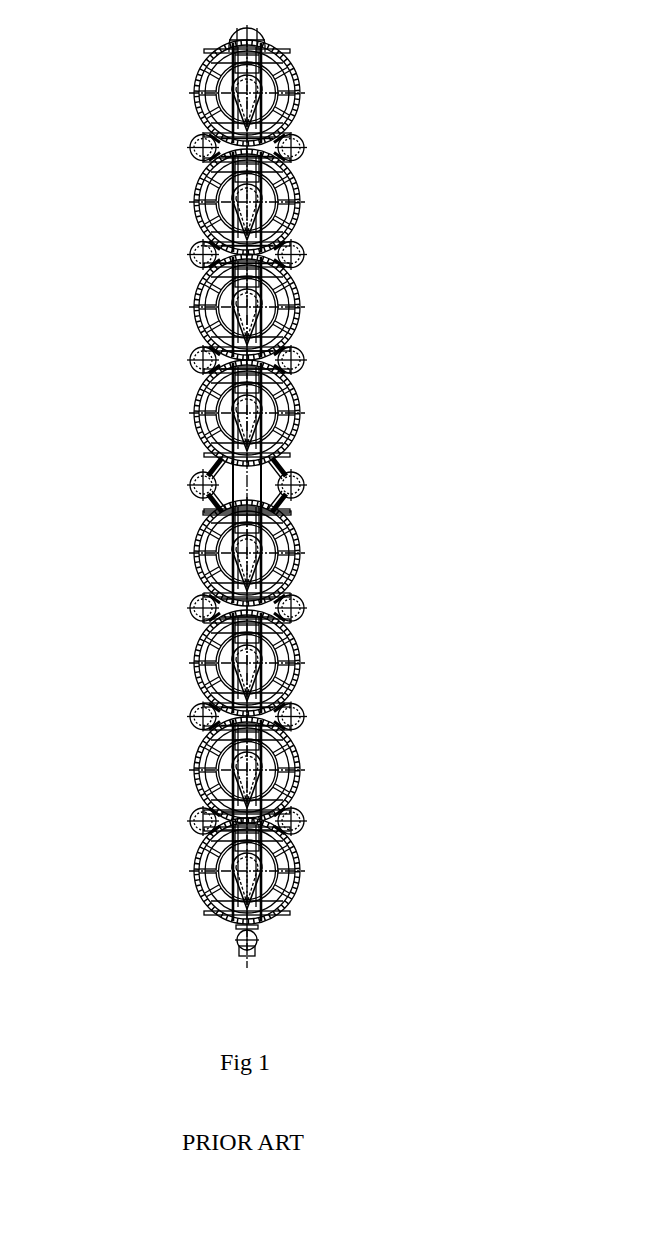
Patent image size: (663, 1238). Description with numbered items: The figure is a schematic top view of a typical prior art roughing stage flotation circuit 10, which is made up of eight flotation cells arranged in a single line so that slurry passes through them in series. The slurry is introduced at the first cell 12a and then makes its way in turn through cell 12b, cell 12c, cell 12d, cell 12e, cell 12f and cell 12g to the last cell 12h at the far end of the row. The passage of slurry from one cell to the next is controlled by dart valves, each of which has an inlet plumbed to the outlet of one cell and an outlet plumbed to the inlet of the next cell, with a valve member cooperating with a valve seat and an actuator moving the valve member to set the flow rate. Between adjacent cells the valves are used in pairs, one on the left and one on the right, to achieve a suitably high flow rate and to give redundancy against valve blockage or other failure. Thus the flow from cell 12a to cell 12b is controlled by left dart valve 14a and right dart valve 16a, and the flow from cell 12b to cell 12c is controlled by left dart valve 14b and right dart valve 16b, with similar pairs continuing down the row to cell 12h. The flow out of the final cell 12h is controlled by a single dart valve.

The roughing stage flotation circuit 10 is at (432, 63).
The flotation cell 12a is at (195, 93).
The flotation cell 12b is at (207, 208).
The flotation cell 12c is at (210, 298).
The flotation cell 12d is at (203, 413).
The flotation cell 12e is at (202, 553).
The flotation cell 12f is at (212, 663).
The flotation cell 12g is at (207, 770).
The flotation cell 12h is at (203, 870).
The left dart valve 14a is at (193, 148).
The left dart valve 14b is at (197, 252).
The right dart valve 16a is at (300, 142).
The right dart valve 16b is at (300, 252).